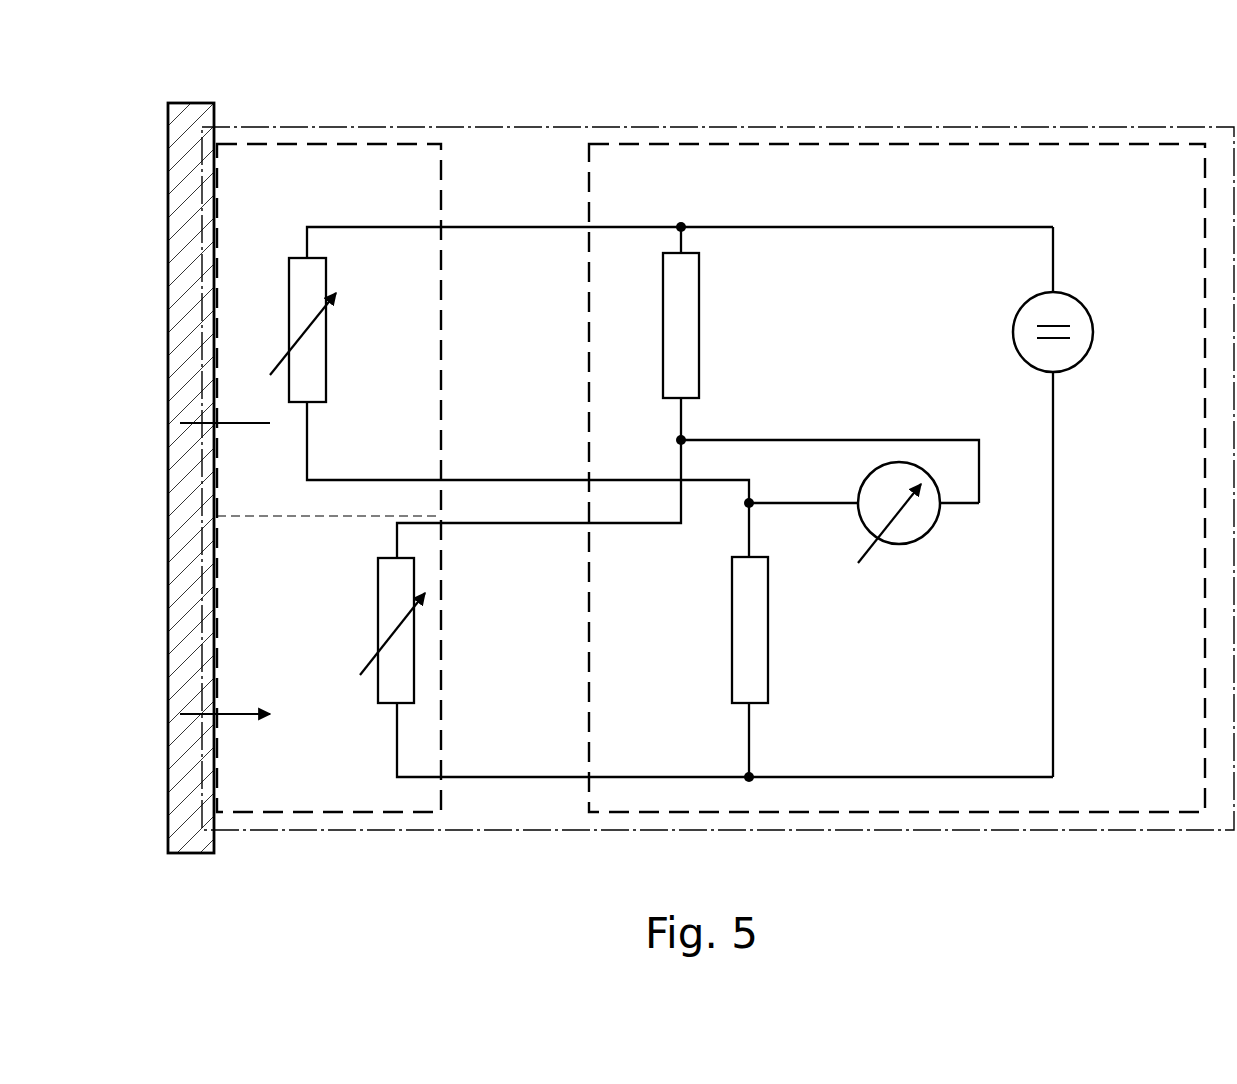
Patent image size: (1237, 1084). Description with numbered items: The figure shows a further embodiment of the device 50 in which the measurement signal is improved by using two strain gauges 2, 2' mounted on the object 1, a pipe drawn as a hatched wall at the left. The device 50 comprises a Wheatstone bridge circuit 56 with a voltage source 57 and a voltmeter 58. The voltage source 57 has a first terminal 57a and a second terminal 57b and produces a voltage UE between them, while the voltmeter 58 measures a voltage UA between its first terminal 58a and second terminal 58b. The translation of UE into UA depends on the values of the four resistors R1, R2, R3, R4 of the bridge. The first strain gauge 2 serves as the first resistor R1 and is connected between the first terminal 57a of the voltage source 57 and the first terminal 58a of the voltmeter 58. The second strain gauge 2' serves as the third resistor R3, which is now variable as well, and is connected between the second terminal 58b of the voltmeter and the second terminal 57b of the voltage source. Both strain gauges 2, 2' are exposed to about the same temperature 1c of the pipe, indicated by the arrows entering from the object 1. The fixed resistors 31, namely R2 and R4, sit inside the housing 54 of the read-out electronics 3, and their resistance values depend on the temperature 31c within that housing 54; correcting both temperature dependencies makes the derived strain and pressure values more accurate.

The object 1 is at (184, 120).
The temperature of the object 1c is at (238, 423).
The strain gauge 2 is at (329, 427).
The second strain gauge 2' is at (329, 714).
The read-out electronics 3 is at (587, 160).
The housing 54 is at (853, 441).
The device 50 is at (618, 831).
The Wheatstone bridge circuit 56 is at (718, 517).
The fixed resistors 31 is at (720, 325).
The temperature within the housing 31c is at (1188, 801).
The first resistor R1 is at (289, 330).
The second resistor R2 is at (713, 630).
The third resistor R3 is at (380, 630).
The fourth resistor R4 is at (720, 325).
The voltage source 57 is at (1093, 332).
The first terminal of the voltage source 57a is at (1055, 267).
The second terminal of the voltage source 57b is at (1055, 392).
The voltmeter 58 is at (905, 522).
The first terminal of the voltmeter 58a is at (807, 505).
The second terminal of the voltmeter 58b is at (965, 505).